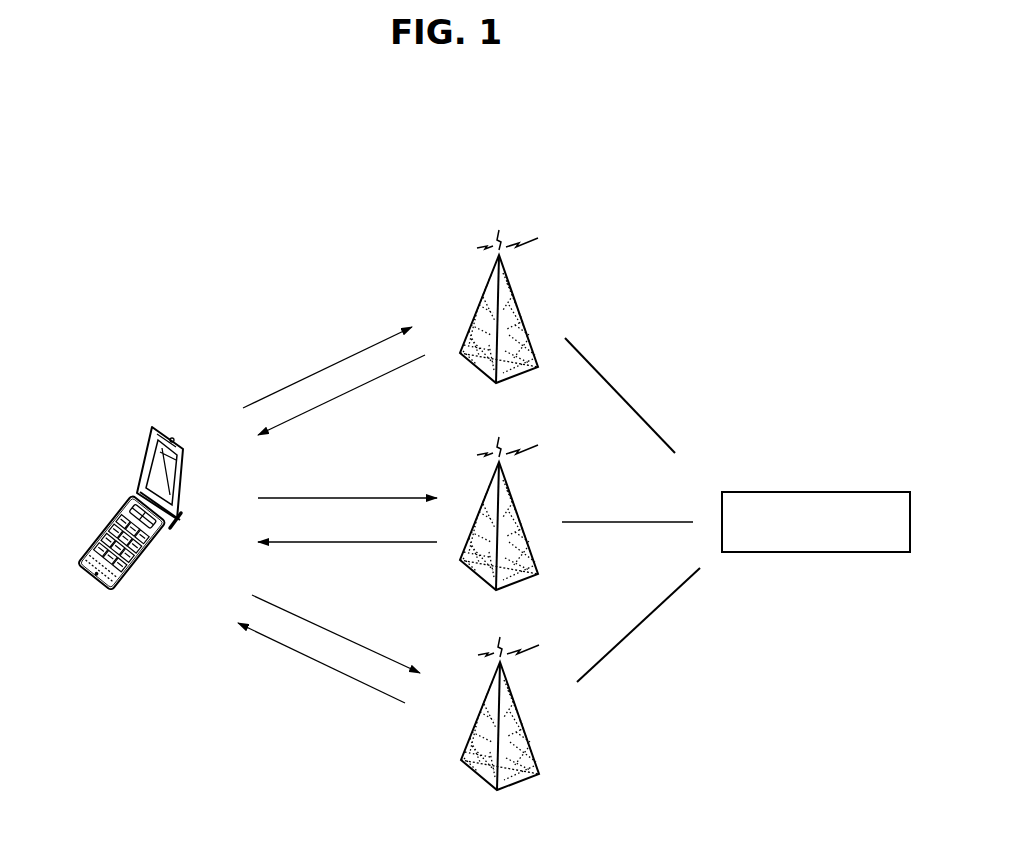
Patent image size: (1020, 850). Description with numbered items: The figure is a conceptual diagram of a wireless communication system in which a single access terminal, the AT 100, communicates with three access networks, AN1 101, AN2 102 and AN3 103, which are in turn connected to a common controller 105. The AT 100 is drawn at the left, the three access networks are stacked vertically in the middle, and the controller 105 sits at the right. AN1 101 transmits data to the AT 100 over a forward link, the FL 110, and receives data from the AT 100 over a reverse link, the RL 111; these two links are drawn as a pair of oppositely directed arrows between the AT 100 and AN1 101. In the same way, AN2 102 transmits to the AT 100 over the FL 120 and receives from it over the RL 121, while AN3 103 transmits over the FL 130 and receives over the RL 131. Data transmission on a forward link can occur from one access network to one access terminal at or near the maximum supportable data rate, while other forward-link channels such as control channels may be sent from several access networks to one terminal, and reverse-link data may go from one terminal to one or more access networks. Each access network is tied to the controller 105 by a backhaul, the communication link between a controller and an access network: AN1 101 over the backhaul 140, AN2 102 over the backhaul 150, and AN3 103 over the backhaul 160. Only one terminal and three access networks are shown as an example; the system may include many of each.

The AT 100 is at (117, 510).
The AN1 101 is at (518, 306).
The AN2 102 is at (518, 512).
The AN3 103 is at (527, 740).
The controller 105 is at (815, 552).
The Forward Link (FL) 110 is at (327, 367).
The Reverse Link (RL) 111 is at (341, 395).
The FL 120 is at (347, 482).
The RL 121 is at (347, 526).
The FL 130 is at (336, 634).
The RL 131 is at (321, 663).
The backhaul 140 is at (620, 395).
The backhaul 150 is at (627, 507).
The backhaul 160 is at (638, 625).